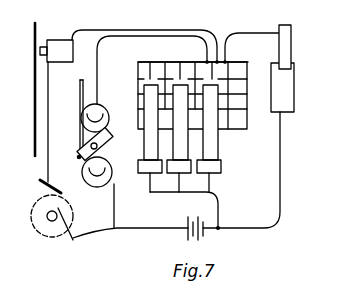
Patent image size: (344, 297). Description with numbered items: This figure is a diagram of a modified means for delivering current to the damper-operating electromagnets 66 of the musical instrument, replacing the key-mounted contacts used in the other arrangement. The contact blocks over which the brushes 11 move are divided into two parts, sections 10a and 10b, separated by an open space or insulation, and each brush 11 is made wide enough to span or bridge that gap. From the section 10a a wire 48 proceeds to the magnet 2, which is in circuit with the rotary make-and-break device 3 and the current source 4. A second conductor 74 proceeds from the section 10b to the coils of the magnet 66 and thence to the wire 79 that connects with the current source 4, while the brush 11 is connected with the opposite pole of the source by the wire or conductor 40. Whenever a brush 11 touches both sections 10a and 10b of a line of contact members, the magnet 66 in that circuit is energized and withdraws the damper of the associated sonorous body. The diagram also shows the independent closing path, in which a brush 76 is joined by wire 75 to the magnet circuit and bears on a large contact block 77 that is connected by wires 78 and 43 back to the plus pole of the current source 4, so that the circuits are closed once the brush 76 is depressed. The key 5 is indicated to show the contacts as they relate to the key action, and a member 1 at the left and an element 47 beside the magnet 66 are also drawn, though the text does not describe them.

The panel 1 is at (35, 103).
The magnet 2 is at (62, 55).
The rotary make-and-break device 3 is at (47, 237).
The current source 4 is at (188, 222).
The key 5 is at (221, 168).
The contact block section 10a is at (227, 68).
The contact block section 10b is at (203, 65).
The brush 11 is at (218, 145).
The conductor 40 is at (228, 197).
The wire 43 is at (241, 170).
The rod 47 is at (57, 120).
The wire 48 is at (137, 29).
The electromagnet 66 is at (97, 188).
The conductor 74 is at (100, 55).
The wire 75 is at (252, 32).
The brush 76 is at (292, 47).
The contact block 77 is at (296, 88).
The wire 78 is at (282, 168).
The wire 79 is at (128, 228).